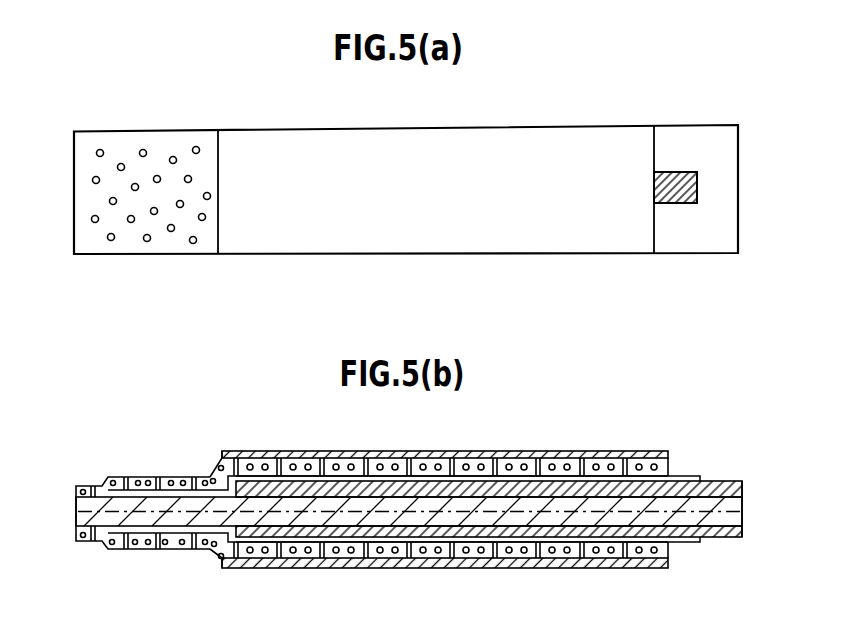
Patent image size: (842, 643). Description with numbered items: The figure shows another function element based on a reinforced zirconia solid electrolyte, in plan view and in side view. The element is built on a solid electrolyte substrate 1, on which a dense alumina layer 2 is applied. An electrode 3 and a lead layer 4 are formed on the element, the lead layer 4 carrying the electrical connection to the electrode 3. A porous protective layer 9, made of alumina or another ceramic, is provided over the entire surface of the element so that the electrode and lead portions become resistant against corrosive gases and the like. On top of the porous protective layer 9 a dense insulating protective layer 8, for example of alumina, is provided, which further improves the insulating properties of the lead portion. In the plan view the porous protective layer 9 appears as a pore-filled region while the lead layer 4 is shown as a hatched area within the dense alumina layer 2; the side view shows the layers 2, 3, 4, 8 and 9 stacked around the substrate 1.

In FIG. 5B, the solid electrolyte substrate 1 is at (76, 518).
In FIG. 5A, the dense alumina layer 2 is at (719, 243).
In FIG. 5B, the dense alumina layer 2 is at (603, 547).
In FIG. 5B, the electrode 3 is at (188, 489).
In FIG. 5A, the lead layer 4 is at (674, 203).
In FIG. 5B, the lead layer 4 is at (373, 566).
In FIG. 5A, the dense insulating protective layer 8 is at (537, 243).
In FIG. 5B, the dense insulating protective layer 8 is at (503, 451).
In FIG. 5A, the porous protective layer 9 is at (130, 245).
In FIG. 5B, the porous protective layer 9 is at (135, 476).